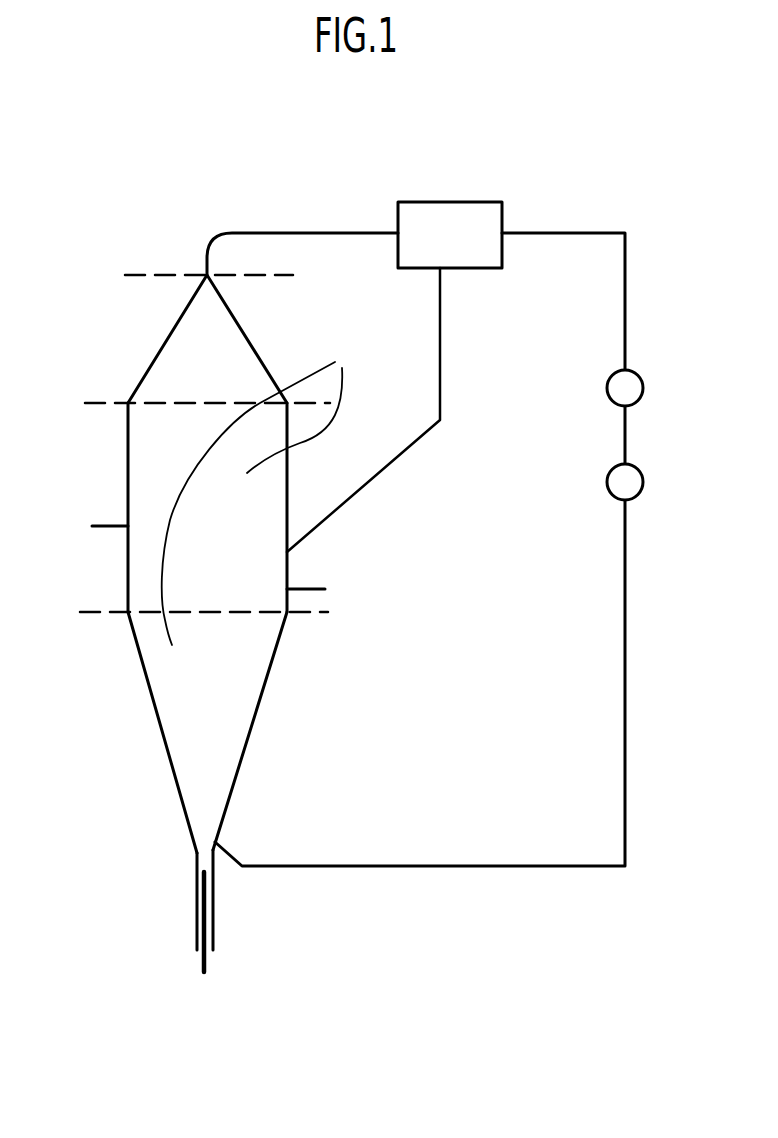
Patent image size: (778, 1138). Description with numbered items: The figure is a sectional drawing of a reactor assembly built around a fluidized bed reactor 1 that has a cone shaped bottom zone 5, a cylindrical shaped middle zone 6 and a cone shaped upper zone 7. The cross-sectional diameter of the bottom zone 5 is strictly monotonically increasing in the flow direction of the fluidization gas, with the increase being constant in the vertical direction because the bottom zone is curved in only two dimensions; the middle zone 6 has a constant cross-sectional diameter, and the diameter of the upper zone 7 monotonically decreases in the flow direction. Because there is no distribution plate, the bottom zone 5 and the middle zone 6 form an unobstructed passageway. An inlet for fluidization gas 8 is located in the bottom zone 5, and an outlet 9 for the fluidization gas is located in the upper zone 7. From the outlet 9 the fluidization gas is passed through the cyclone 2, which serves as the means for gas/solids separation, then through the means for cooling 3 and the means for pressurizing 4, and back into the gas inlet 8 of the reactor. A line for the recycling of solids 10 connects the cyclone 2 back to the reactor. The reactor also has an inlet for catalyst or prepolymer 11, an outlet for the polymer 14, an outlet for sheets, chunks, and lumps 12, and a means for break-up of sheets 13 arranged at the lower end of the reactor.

The fluidized bed reactor 1 is at (250, 387).
The cyclone 2 is at (473, 202).
The means for cooling 3 is at (642, 478).
The means for pressurizing 4 is at (642, 382).
The bottom zone 5 is at (237, 728).
The middle zone 6 is at (262, 513).
The upper zone 7 is at (176, 370).
The inlet for fluidization gas 8 is at (217, 840).
The outlet 9 is at (208, 272).
The line for the recycling of solids 10 is at (440, 363).
The inlet for catalyst or prepolymer 11 is at (110, 515).
The outlet for sheets, chunks, and lumps 12 is at (213, 896).
The means for break-up of sheets 13 is at (197, 925).
The outlet for the polymer 14 is at (308, 589).